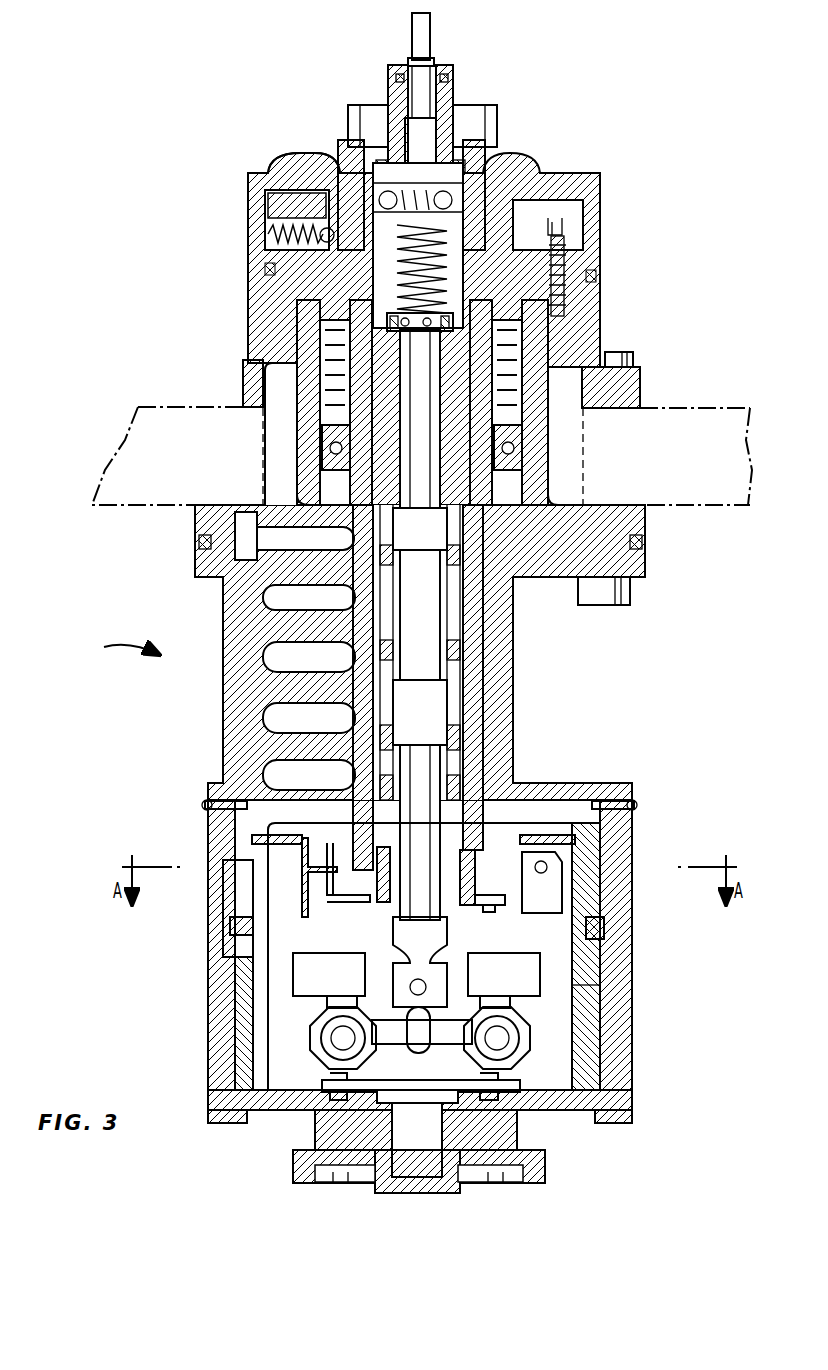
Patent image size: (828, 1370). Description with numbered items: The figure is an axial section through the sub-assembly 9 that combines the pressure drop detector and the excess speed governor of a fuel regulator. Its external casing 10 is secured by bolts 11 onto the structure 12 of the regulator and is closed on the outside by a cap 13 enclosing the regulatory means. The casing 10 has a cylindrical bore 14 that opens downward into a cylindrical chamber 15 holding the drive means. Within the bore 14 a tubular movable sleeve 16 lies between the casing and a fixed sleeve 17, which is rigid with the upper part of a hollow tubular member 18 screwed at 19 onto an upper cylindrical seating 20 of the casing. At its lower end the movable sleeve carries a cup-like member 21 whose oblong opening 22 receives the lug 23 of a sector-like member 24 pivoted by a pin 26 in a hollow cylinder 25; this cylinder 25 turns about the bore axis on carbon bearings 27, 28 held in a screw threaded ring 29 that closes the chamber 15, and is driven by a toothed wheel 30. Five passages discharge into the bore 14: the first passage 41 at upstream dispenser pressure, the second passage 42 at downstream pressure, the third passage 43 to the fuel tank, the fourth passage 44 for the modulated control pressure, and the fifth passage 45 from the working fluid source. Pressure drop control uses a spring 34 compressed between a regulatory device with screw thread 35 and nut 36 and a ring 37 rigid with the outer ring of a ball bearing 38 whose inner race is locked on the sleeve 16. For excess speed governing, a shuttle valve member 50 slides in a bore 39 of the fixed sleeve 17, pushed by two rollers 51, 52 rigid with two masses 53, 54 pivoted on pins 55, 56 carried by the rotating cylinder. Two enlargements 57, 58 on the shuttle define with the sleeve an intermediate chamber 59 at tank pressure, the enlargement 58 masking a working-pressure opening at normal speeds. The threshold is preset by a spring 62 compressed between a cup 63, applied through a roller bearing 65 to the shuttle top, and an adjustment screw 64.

The sub-assembly 9 is at (122, 643).
The external casing 10 is at (570, 556).
The bolts 11 is at (630, 600).
The structure of the regulator 12 is at (714, 451).
The cap 13 is at (600, 200).
The cylindrical bore 14 is at (478, 684).
The cylindrical chamber 15 is at (520, 935).
The tubular movable sleeve 16 is at (478, 628).
The fixed sleeve 17 is at (450, 478).
The hollow tubular member 18 is at (500, 410).
The screw connection 19 is at (555, 225).
The upper cylindrical seating 20 is at (570, 305).
The cup-like member 21 is at (358, 905).
The oblong opening 22 is at (333, 882).
The lug 23 is at (290, 845).
The sector-like member 24 is at (300, 913).
The hollow cylinder 25 is at (575, 992).
The pin 26 is at (552, 884).
The carbon bearing 27 is at (590, 1037).
The carbon bearing 28 is at (560, 932).
The screw threaded ring 29 is at (617, 1080).
The toothed wheel 30 is at (545, 1168).
The spring 34 is at (325, 322).
The screw thread of regulatory device 35 is at (500, 148).
The nut 36 is at (495, 118).
The ring 37 is at (322, 415).
The ball bearing 38 is at (330, 445).
The bore of the sleeve 39 is at (380, 480).
The first passage 41 is at (272, 775).
The second passage 42 is at (272, 718).
The third passage 43 is at (272, 657).
The fourth passage 44 is at (275, 597).
The fifth passage 45 is at (275, 540).
The shuttle valve member 50 is at (420, 767).
The roller 51 is at (400, 1057).
The roller 52 is at (427, 1055).
The mass 53 is at (336, 982).
The mass 54 is at (510, 982).
The pin 55 is at (340, 1040).
The pin 56 is at (500, 1040).
The enlargement 57 is at (430, 700).
The enlargement 58 is at (425, 520).
The intermediate chamber 59 is at (404, 635).
The spring 62 is at (365, 235).
The cup 63 is at (330, 300).
The adjustment screw 64 is at (415, 135).
The roller bearing 65 is at (420, 331).